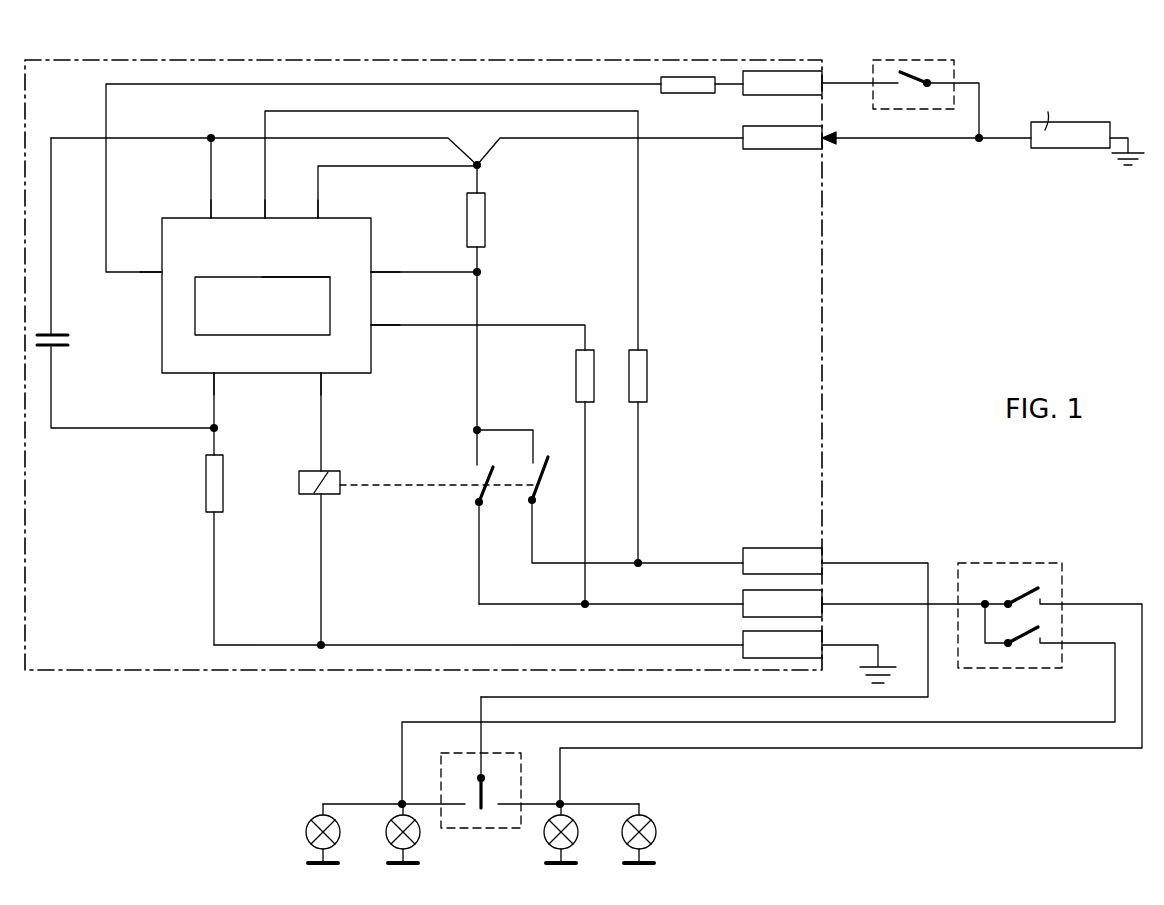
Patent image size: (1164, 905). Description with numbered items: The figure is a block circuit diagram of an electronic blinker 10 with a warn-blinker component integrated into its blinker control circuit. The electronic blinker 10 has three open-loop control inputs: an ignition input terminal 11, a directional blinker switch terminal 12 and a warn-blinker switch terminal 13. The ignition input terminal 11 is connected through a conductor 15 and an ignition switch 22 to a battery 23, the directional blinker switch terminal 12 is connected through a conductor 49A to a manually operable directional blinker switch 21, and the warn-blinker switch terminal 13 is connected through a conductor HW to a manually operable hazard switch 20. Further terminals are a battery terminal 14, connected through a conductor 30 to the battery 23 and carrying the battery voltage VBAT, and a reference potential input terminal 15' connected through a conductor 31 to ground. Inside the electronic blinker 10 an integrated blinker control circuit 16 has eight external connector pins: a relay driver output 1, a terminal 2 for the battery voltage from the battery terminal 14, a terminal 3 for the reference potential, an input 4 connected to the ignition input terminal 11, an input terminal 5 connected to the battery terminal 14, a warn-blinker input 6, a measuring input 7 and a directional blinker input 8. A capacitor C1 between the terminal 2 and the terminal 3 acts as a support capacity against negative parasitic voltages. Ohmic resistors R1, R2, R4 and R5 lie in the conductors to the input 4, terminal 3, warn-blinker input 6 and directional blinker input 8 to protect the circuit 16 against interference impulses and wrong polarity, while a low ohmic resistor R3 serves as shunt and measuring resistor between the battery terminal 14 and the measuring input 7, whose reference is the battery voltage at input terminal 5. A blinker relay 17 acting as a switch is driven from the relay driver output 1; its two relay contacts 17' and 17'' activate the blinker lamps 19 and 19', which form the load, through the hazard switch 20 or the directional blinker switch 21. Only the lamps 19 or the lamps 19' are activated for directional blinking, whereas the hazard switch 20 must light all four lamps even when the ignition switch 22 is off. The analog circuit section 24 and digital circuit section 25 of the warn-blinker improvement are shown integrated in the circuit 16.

The electronic blinker 10 is at (824, 316).
The ohmic resistor R1 is at (677, 77).
The ignition input terminal 11 is at (748, 96).
The conductor 15 is at (860, 65).
The ignition switch 22 is at (956, 62).
The conductor 30 is at (860, 142).
The battery terminal 14 is at (755, 153).
The battery 23 is at (1040, 150).
The battery voltage VBAT is at (1031, 141).
The capacitor C1 is at (63, 343).
The integrated blinker control circuit 16 is at (371, 362).
The analog circuit section 24 is at (226, 258).
The digital circuit section 25 is at (280, 258).
The terminal 2 is at (211, 222).
The directional blinker input 8 is at (265, 222).
The input terminal 5 is at (318, 222).
The input 4 is at (160, 269).
The measuring input 7 is at (371, 272).
The warn-blinker input 6 is at (371, 325).
The terminal 3 is at (213, 373).
The relay driver output 1 is at (321, 355).
The low ohmic resistor R3 is at (486, 224).
The ohmic resistor R4 is at (576, 372).
The ohmic resistor R5 is at (647, 362).
The ohmic resistor R2 is at (206, 497).
The blinker relay 17 is at (416, 502).
The relay contact 17' is at (458, 517).
The relay contact 17'' is at (610, 495).
The directional blinker switch terminal 12 is at (740, 547).
The warn-blinker switch terminal 13 is at (740, 595).
The reference potential input terminal 15' is at (753, 636).
The conductor 31 is at (866, 650).
The conductor 49A is at (900, 562).
The conductor HW is at (894, 608).
The hazard switch 20 is at (985, 562).
The directional blinker switch 21 is at (458, 752).
The blinker lamps 19' is at (363, 816).
The blinker lamps 19 is at (600, 816).